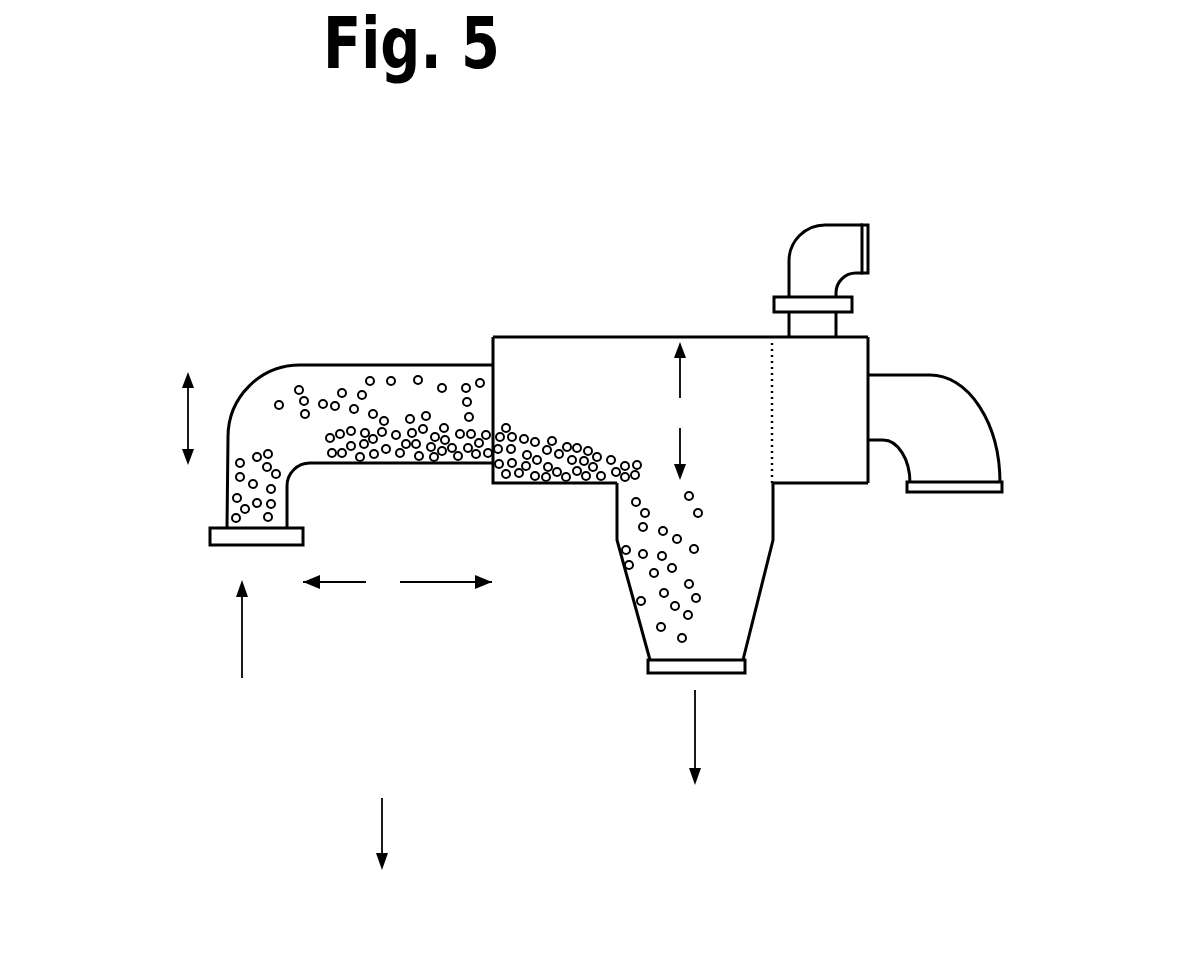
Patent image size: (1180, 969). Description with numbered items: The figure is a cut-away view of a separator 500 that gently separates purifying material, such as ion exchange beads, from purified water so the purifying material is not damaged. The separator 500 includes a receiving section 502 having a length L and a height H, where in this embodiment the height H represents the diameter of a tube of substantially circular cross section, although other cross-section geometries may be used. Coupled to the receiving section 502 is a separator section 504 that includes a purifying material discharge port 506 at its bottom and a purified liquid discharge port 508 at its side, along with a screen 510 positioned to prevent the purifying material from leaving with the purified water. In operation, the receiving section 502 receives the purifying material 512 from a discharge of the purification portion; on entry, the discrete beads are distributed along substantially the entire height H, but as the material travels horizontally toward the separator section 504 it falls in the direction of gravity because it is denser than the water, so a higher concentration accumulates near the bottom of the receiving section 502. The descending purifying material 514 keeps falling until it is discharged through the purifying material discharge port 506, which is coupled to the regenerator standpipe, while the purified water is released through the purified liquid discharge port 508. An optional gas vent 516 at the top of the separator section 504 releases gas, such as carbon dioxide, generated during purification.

The separator 500 is at (618, 178).
The receiving section 502 is at (346, 366).
The separator section 504 is at (552, 337).
The purifying material discharge port 506 is at (675, 673).
The purified liquid discharge port 508 is at (842, 465).
The screen 510 is at (766, 367).
The purifying material 512 is at (433, 488).
The descending purifying material 514 is at (713, 532).
The optional gas vent 516 is at (868, 262).